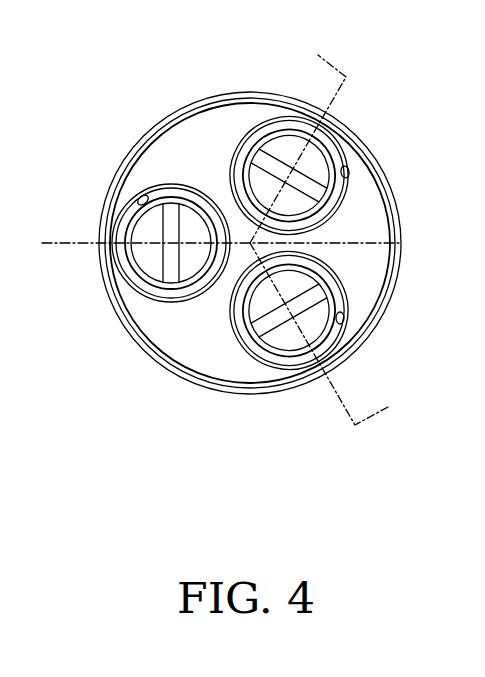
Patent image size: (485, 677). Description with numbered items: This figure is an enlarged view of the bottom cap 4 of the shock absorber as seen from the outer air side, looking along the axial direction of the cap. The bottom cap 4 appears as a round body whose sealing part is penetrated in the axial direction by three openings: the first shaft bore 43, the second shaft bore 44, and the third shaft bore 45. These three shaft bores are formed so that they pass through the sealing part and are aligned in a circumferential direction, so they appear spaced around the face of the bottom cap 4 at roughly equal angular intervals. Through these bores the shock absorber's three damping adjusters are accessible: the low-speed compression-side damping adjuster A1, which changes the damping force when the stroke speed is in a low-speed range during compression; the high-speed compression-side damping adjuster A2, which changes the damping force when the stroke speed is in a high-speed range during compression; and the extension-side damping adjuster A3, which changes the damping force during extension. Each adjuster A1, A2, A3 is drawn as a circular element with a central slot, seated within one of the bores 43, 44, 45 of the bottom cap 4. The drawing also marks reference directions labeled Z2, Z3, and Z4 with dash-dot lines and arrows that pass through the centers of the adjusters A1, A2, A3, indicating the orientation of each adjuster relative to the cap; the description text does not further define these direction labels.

The bottom cap 4 is at (367, 243).
The first shaft bore 43 is at (141, 197).
The second shaft bore 44 is at (343, 318).
The third shaft bore 45 is at (348, 172).
The low-speed compression-side damping adjuster A1 is at (153, 258).
The high-speed compression-side damping adjuster A2 is at (283, 340).
The extension-side damping adjuster A3 is at (283, 150).
The axis Z2 is at (42, 245).
The axis Z3 is at (355, 425).
The axis Z4 is at (346, 77).